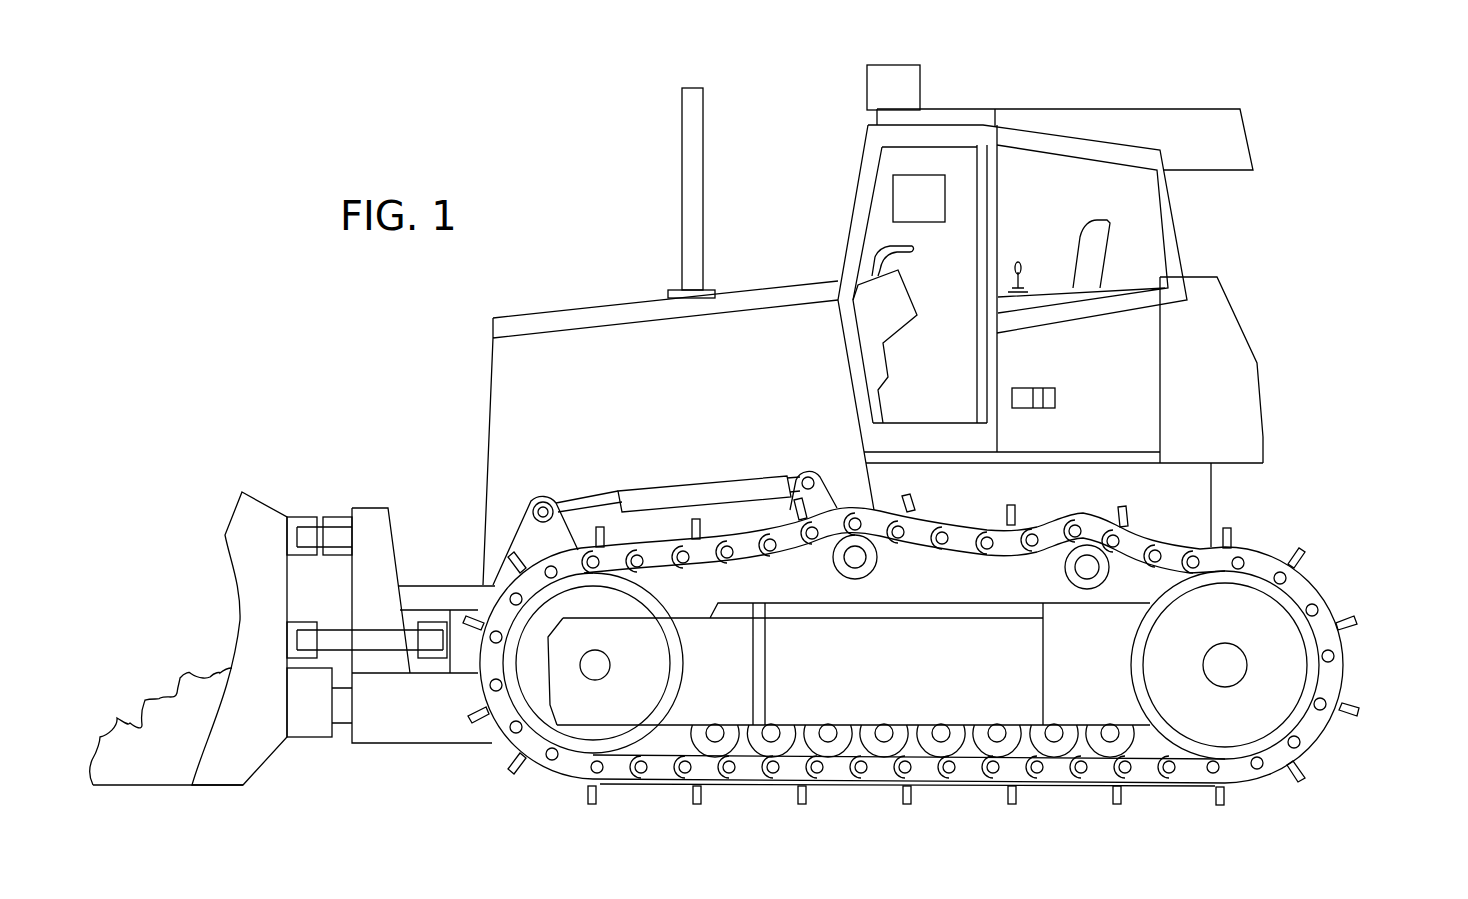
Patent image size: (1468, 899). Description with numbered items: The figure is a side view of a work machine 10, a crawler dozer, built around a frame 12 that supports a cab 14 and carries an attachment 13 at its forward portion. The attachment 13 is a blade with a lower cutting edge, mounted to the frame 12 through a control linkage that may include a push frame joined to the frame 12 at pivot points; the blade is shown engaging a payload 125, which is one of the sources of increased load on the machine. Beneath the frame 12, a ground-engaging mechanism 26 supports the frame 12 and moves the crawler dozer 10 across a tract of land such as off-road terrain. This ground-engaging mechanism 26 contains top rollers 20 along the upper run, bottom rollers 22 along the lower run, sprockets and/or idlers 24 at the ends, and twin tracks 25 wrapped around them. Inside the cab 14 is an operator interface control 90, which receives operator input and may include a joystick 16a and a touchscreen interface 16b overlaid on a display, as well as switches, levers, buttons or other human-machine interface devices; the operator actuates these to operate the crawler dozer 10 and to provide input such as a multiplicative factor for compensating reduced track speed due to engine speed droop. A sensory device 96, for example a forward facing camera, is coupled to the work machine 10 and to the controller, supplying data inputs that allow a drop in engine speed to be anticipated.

The work machine 10 is at (1348, 98).
The frame 12 is at (1222, 505).
The attachment 13 is at (257, 680).
The cab 14 is at (1057, 63).
The joystick 16a is at (877, 243).
The touchscreen interface 16b is at (893, 171).
The top rollers 20 is at (1066, 570).
The bottom rollers 22 is at (933, 750).
The sprockets and/or idlers 24 is at (540, 690).
The twin tracks 25 is at (1328, 747).
The ground-engaging mechanism 26 is at (1353, 677).
The operator interface control 90 is at (905, 211).
The sensory device 96 is at (878, 100).
The payload 125 is at (128, 772).